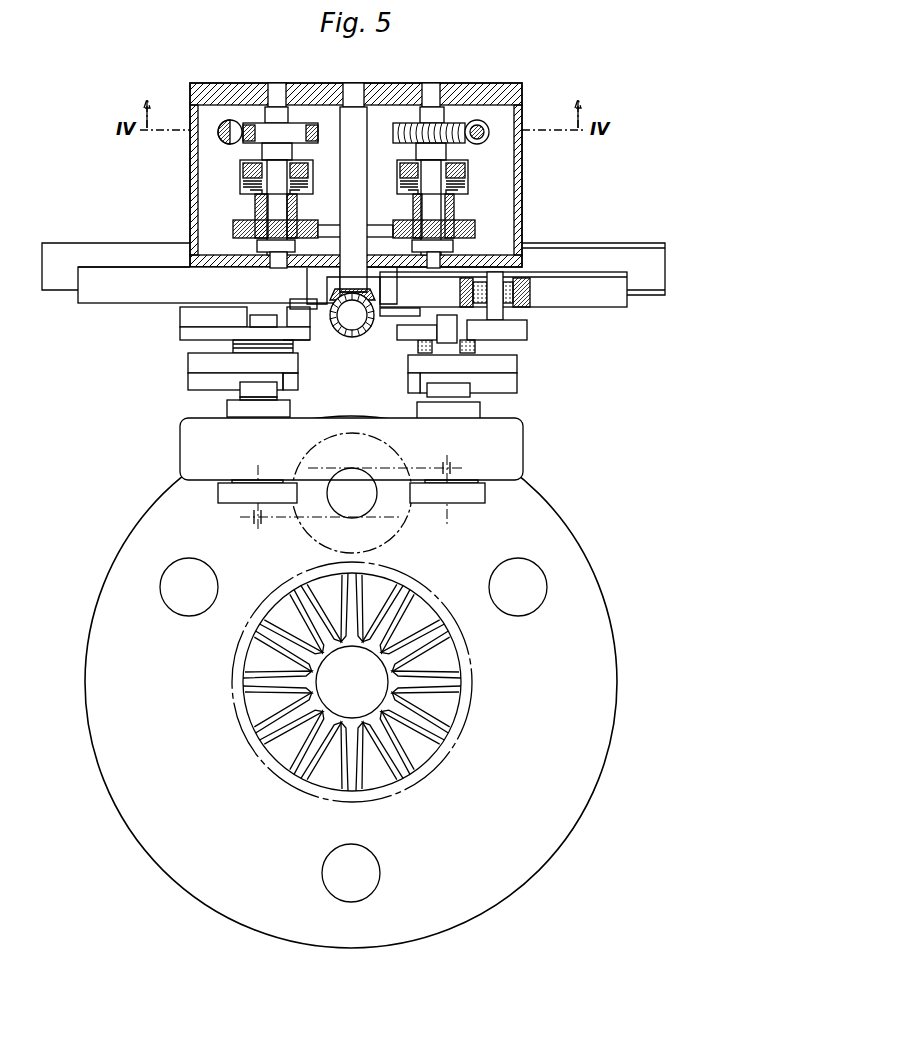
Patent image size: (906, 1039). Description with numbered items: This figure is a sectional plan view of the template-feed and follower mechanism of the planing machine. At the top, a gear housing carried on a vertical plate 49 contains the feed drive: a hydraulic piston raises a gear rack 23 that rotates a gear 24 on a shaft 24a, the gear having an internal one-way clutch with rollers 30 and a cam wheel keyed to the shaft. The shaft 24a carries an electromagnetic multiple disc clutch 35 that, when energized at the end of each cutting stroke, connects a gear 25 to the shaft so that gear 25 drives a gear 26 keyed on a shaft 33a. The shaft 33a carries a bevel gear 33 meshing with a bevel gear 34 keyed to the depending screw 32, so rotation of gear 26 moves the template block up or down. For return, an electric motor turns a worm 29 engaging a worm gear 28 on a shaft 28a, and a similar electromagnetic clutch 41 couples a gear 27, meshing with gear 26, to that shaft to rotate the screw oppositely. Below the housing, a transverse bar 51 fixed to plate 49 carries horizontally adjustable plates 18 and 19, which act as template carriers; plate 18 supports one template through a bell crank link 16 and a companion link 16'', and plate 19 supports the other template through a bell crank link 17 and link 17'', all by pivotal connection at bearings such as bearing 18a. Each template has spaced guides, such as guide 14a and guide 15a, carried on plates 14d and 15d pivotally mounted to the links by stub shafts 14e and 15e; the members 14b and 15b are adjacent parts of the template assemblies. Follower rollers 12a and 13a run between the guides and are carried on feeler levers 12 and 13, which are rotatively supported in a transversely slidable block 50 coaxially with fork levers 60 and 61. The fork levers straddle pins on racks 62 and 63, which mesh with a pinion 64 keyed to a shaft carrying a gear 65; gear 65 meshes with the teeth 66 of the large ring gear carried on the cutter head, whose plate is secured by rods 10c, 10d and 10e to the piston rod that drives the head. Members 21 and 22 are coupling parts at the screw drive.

The rod 10c is at (177, 597).
The rod 10d is at (531, 597).
The rod 10e is at (362, 862).
The feeler lever 12 is at (485, 408).
The follower roller 12a is at (453, 389).
The feeler lever 13 is at (237, 407).
The follower roller 13a is at (255, 388).
The guide 14a is at (415, 383).
The jaw carrier block 14b is at (508, 384).
The plate 14d is at (503, 365).
The stub shaft 14e is at (450, 330).
The guide 15a is at (285, 403).
The jaw carrier block 15b is at (198, 383).
The plate 15d is at (193, 358).
The stub shaft 15e is at (260, 320).
The link 16 is at (491, 336).
The slide block extension 16'' is at (407, 346).
The link 17 is at (218, 330).
The slide block extension 17'' is at (308, 354).
The plate 18 is at (607, 300).
The bearing 18a is at (533, 292).
The plate 19 is at (112, 291).
The coupling member 21 is at (403, 312).
The coupling member 22 is at (297, 308).
The gear rack 23 is at (228, 120).
The gear 24 is at (244, 128).
The shaft 24a is at (277, 95).
The gear 25 is at (233, 227).
The gear 26 is at (330, 227).
The gear 27 is at (475, 228).
The worm gear 28 is at (410, 128).
The shaft 28a is at (435, 97).
The worm 29 is at (478, 120).
The rollers 30 is at (298, 124).
The screw 32 is at (348, 338).
The bevel gear 33 is at (353, 199).
The shaft 33a is at (352, 128).
The bevel gear 34 is at (357, 334).
The electromagnetic multiple disc clutch 35 is at (243, 168).
The electromagnetic multiple disc clutch 41 is at (465, 172).
The vertical plate 49 is at (560, 260).
The transversely slidable block 50 is at (508, 448).
The transverse bar 51 is at (651, 286).
The fork lever 60 is at (466, 499).
The fork lever 61 is at (243, 498).
The rack 62 is at (449, 464).
The rack 63 is at (270, 521).
The pinion 64 is at (332, 512).
The gear 65 is at (400, 533).
The teeth 66 is at (443, 598).